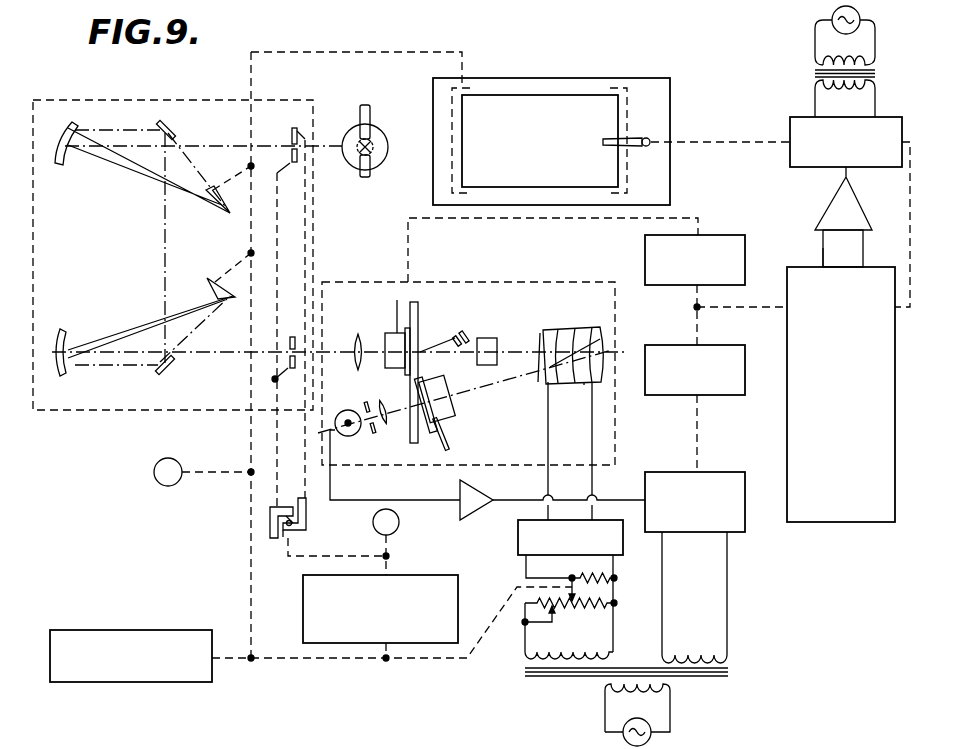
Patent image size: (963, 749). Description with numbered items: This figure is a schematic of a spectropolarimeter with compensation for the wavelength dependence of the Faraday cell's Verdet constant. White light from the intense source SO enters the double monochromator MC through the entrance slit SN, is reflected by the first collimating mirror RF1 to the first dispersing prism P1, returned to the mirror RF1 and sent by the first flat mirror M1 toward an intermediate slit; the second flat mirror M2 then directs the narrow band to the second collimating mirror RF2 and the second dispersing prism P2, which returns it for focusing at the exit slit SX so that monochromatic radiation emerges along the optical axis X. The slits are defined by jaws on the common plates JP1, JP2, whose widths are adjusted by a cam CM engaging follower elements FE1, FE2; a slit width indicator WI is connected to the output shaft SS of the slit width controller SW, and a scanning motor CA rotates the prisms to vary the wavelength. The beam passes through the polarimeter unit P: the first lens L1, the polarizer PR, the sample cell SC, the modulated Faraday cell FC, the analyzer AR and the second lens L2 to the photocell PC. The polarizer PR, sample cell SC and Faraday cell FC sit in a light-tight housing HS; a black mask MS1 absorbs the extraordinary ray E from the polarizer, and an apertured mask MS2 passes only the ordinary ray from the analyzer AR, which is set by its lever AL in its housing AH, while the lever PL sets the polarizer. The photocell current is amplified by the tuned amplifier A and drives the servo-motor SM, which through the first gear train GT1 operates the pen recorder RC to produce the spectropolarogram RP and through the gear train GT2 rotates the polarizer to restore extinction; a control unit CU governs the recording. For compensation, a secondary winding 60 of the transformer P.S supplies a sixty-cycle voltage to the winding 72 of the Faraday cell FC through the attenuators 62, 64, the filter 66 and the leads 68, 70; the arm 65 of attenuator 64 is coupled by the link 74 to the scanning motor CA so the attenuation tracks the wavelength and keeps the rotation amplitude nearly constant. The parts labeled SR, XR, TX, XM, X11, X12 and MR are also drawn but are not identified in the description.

The monochromator MC is at (155, 101).
The first collimating mirror RF1 is at (60, 167).
The first flat mirror M1 is at (175, 126).
The first dispersing prism P1 is at (212, 189).
The second dispersing prism P2 is at (210, 282).
The second collimating mirror RF2 is at (63, 330).
The second flat mirror M2 is at (167, 375).
The entrance slit SN is at (291, 135).
The exit slit SX is at (289, 347).
The source SO is at (385, 139).
The recorder RC is at (647, 78).
The spectropolarogram RP is at (523, 108).
The recorder pen drive SR is at (744, 141).
The recorder servo motor XR is at (797, 117).
The transformer TX is at (815, 73).
The amplifier XM is at (836, 194).
The amplifier input lead X12 is at (863, 242).
The amplifier input lead X11 is at (823, 249).
The control unit CU is at (848, 332).
The additional gear train GT2 is at (729, 236).
The first gear train GT1 is at (745, 385).
The servo-motor SM is at (740, 532).
The secondary winding 60 is at (530, 653).
The transformer P.S is at (651, 738).
The filter 66 is at (518, 542).
The arm of attenuator 65 is at (617, 578).
The attenuator 64 is at (617, 603).
The attenuator 62 is at (569, 637).
The tuned amplifier A is at (487, 475).
The lead 68 is at (548, 455).
The lead 70 is at (595, 450).
The housing HS is at (548, 282).
The polarimeter unit P is at (398, 290).
The polarizer lever PL is at (409, 305).
The polarizer PR is at (393, 335).
The first lens L1 is at (358, 334).
The extraordinary ray E is at (455, 337).
The black mask MS1 is at (464, 331).
The sample cell SC is at (495, 338).
The Faraday cell FC is at (594, 318).
The modulator rod MR is at (600, 339).
The winding 72 is at (584, 385).
The analyzer AR is at (452, 411).
The analyzer lever AL is at (450, 436).
The analyzer housing AH is at (426, 436).
The second lens L2 is at (392, 400).
The apertured mask MS2 is at (366, 402).
The photocell PC is at (346, 435).
The common plate JP2 is at (270, 533).
The common plate JP1 is at (307, 521).
The cam CM is at (286, 522).
The follower element FE2 is at (276, 507).
The follower element FE1 is at (284, 537).
The output shaft SS is at (312, 553).
The slit width indicator WI is at (386, 583).
The slit width controller SW is at (458, 585).
The link 74 is at (402, 660).
The scanning motor CA is at (117, 630).
The optical axis X is at (336, 292).